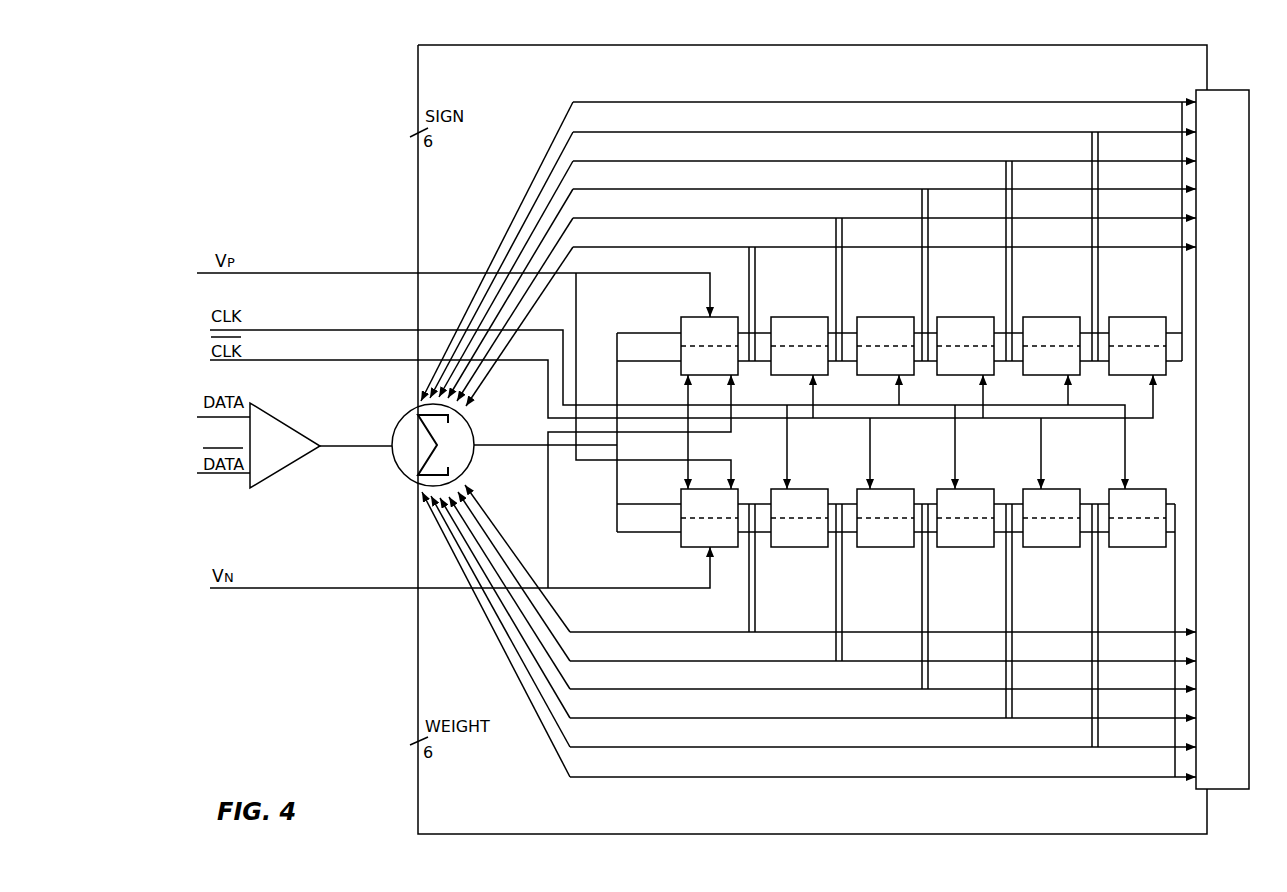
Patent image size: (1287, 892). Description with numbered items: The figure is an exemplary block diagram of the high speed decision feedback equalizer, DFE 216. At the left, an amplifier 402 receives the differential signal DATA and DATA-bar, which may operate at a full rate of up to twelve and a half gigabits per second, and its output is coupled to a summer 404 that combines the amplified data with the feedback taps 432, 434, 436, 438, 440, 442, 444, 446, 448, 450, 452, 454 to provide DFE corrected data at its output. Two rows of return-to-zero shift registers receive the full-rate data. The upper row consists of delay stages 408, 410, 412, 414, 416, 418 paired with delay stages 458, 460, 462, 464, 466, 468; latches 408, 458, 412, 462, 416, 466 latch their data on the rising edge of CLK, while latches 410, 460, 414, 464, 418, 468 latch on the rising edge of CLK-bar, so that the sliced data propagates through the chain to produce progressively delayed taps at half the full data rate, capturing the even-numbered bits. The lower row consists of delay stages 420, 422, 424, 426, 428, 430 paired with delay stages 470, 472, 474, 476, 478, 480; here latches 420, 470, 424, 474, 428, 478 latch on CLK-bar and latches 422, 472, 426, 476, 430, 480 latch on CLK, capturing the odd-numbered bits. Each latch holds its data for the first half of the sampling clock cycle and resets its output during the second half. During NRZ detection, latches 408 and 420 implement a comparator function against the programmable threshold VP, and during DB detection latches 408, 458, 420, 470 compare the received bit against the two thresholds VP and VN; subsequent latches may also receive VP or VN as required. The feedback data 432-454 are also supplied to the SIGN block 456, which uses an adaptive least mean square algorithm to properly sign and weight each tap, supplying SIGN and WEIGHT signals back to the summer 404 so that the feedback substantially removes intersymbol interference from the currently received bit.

The DFE 216 is at (268, 175).
The amplifier 402 is at (293, 423).
The summer 404 is at (390, 448).
The RTZ latch 408 is at (681, 327).
The RTZ latch 410 is at (771, 327).
The RTZ latch 412 is at (857, 327).
The RTZ latch 414 is at (937, 327).
The RTZ latch 416 is at (1023, 327).
The RTZ latch 418 is at (1109, 327).
The RTZ latch 420 is at (681, 496).
The RTZ latch 422 is at (771, 496).
The RTZ latch 424 is at (857, 496).
The RTZ latch 426 is at (937, 496).
The RTZ latch 428 is at (1023, 496).
The RTZ latch 430 is at (1109, 496).
The feedback tap 432 is at (642, 247).
The feedback tap 434 is at (642, 218).
The feedback tap 436 is at (642, 189).
The feedback tap 438 is at (642, 161).
The feedback tap 440 is at (642, 132).
The feedback tap 442 is at (642, 102).
The feedback tap 444 is at (642, 632).
The feedback tap 446 is at (642, 661).
The feedback tap 448 is at (642, 689).
The feedback tap 450 is at (642, 718).
The feedback tap 452 is at (642, 747).
The feedback tap 454 is at (642, 777).
The SIGN block 456 is at (1199, 90).
The RTZ latch 458 is at (681, 370).
The RTZ latch 460 is at (771, 370).
The RTZ latch 462 is at (857, 370).
The RTZ latch 464 is at (937, 370).
The RTZ latch 466 is at (1023, 370).
The RTZ latch 468 is at (1109, 370).
The RTZ latch 470 is at (681, 541).
The RTZ latch 472 is at (771, 544).
The RTZ latch 474 is at (857, 544).
The RTZ latch 476 is at (937, 544).
The RTZ latch 478 is at (1023, 544).
The RTZ latch 480 is at (1109, 544).